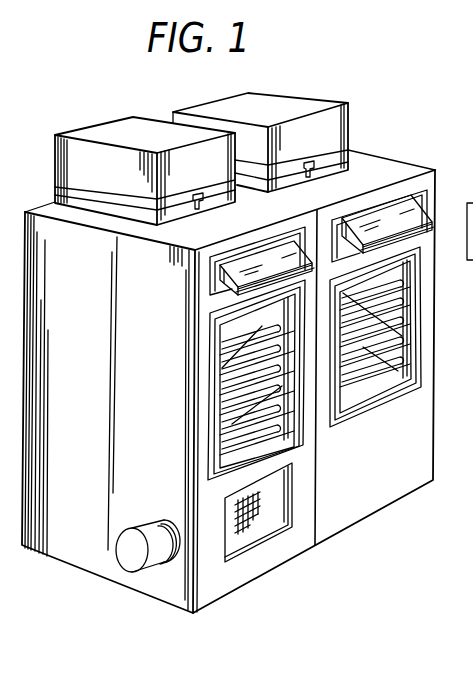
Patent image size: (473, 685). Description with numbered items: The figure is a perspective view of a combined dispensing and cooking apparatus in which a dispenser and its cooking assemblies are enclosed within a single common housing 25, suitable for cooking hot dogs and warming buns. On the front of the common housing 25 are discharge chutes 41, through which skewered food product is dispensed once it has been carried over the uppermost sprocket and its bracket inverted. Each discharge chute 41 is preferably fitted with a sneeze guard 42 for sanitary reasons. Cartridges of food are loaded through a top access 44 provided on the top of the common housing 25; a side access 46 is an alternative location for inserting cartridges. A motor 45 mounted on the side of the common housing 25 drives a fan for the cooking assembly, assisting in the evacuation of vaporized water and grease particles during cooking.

The common housing 25 is at (88, 563).
The discharge chute 41 is at (224, 297).
The sneeze guard 42 is at (235, 270).
The top access 44 is at (114, 135).
The motor 45 is at (160, 558).
The side access 46 is at (465, 266).